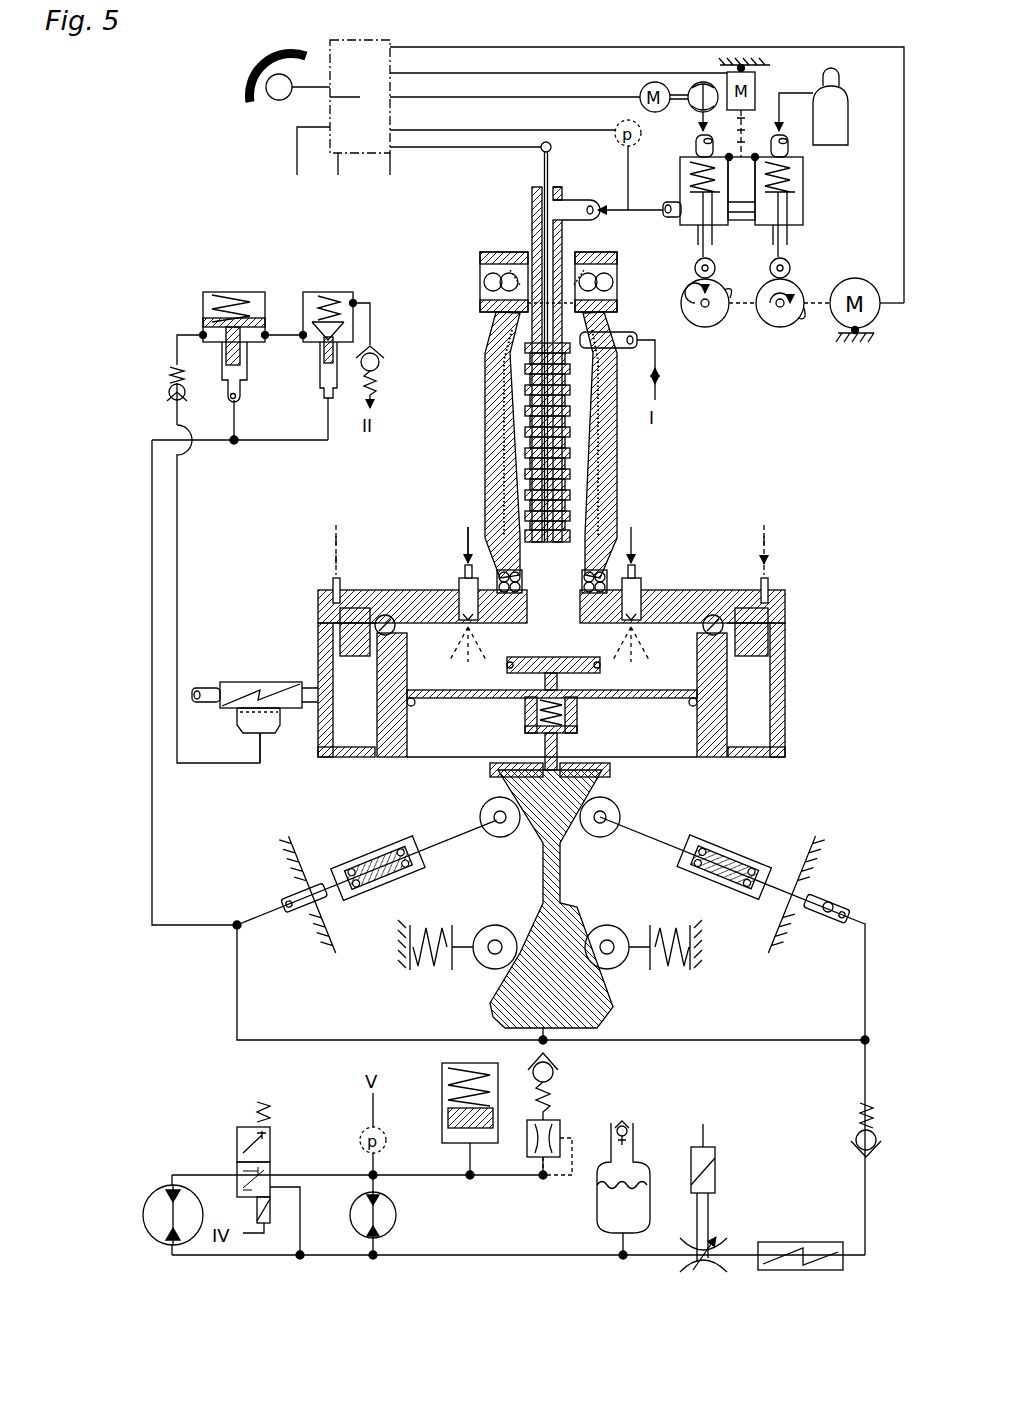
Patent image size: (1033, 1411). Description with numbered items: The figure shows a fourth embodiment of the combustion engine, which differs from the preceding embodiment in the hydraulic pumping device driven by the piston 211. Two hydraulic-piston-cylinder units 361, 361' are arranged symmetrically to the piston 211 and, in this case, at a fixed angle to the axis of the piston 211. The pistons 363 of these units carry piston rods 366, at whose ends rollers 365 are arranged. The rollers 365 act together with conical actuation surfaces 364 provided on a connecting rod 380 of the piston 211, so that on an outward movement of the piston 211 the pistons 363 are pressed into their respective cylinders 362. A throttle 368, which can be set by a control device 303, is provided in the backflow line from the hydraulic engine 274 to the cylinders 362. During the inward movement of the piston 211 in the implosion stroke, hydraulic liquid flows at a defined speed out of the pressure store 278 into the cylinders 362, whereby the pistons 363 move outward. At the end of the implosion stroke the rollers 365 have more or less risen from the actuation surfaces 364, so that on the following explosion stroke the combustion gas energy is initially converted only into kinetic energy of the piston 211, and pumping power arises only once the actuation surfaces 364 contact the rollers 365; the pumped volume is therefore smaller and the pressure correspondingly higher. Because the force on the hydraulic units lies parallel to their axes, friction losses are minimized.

The control device 303 is at (330, 97).
The piston 211 is at (787, 673).
The conical actuation surfaces 364 is at (620, 763).
The rollers 365 is at (637, 687).
The piston rods 366 is at (606, 783).
The hydraulic-piston-cylinder unit 361 is at (740, 855).
The hydraulic-piston-cylinder unit 361' is at (282, 873).
The pistons 363 is at (745, 838).
The cylinders 362 is at (847, 917).
The connecting rod 380 is at (443, 760).
The hydraulic engine 274 is at (382, 1213).
The pressure store 278 is at (610, 1202).
The throttle 368 is at (703, 1262).